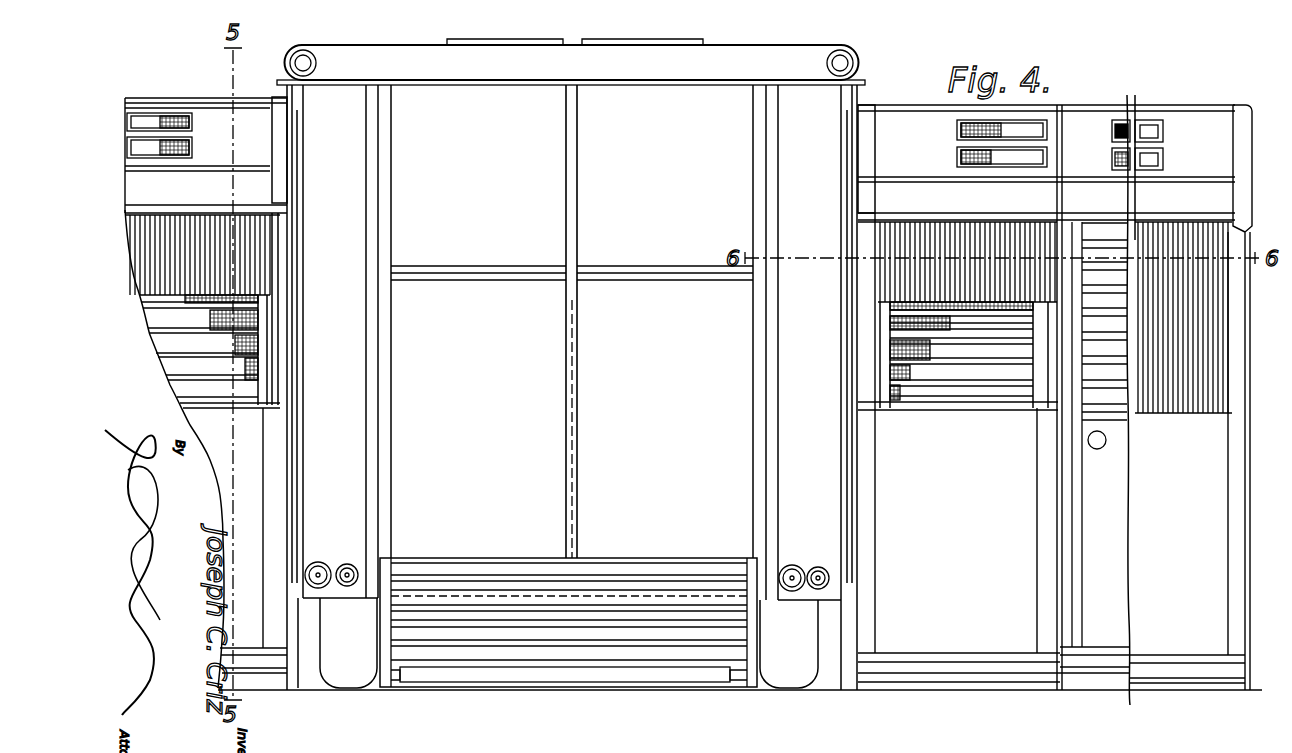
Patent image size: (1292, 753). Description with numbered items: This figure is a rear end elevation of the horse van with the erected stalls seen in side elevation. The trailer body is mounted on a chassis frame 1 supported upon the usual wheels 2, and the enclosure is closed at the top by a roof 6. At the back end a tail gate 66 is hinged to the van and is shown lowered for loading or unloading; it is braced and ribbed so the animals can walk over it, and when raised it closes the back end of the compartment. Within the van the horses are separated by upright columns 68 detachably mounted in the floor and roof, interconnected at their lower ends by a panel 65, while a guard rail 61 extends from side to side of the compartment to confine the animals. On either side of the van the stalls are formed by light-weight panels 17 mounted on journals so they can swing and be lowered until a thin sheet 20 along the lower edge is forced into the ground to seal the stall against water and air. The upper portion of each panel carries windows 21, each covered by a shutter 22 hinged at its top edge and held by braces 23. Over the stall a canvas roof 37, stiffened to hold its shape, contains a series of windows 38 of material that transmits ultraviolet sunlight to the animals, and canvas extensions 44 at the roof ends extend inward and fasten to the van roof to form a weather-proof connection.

The chassis frame 1 is at (839, 601).
The wheels 2 is at (321, 664).
The roof 6 is at (413, 47).
The panel 17 is at (195, 420).
The thin sheet 20 is at (256, 686).
The windows 21 is at (150, 318).
The shutter 22 is at (143, 275).
The braces 23 is at (257, 392).
The roof sections 37 is at (121, 116).
The windows 38 is at (125, 150).
The canvas extensions 44 is at (282, 100).
The guard rail 61 is at (483, 282).
The panel 65 is at (578, 424).
The tail gate 66 is at (513, 684).
The upright columns 68 is at (578, 243).